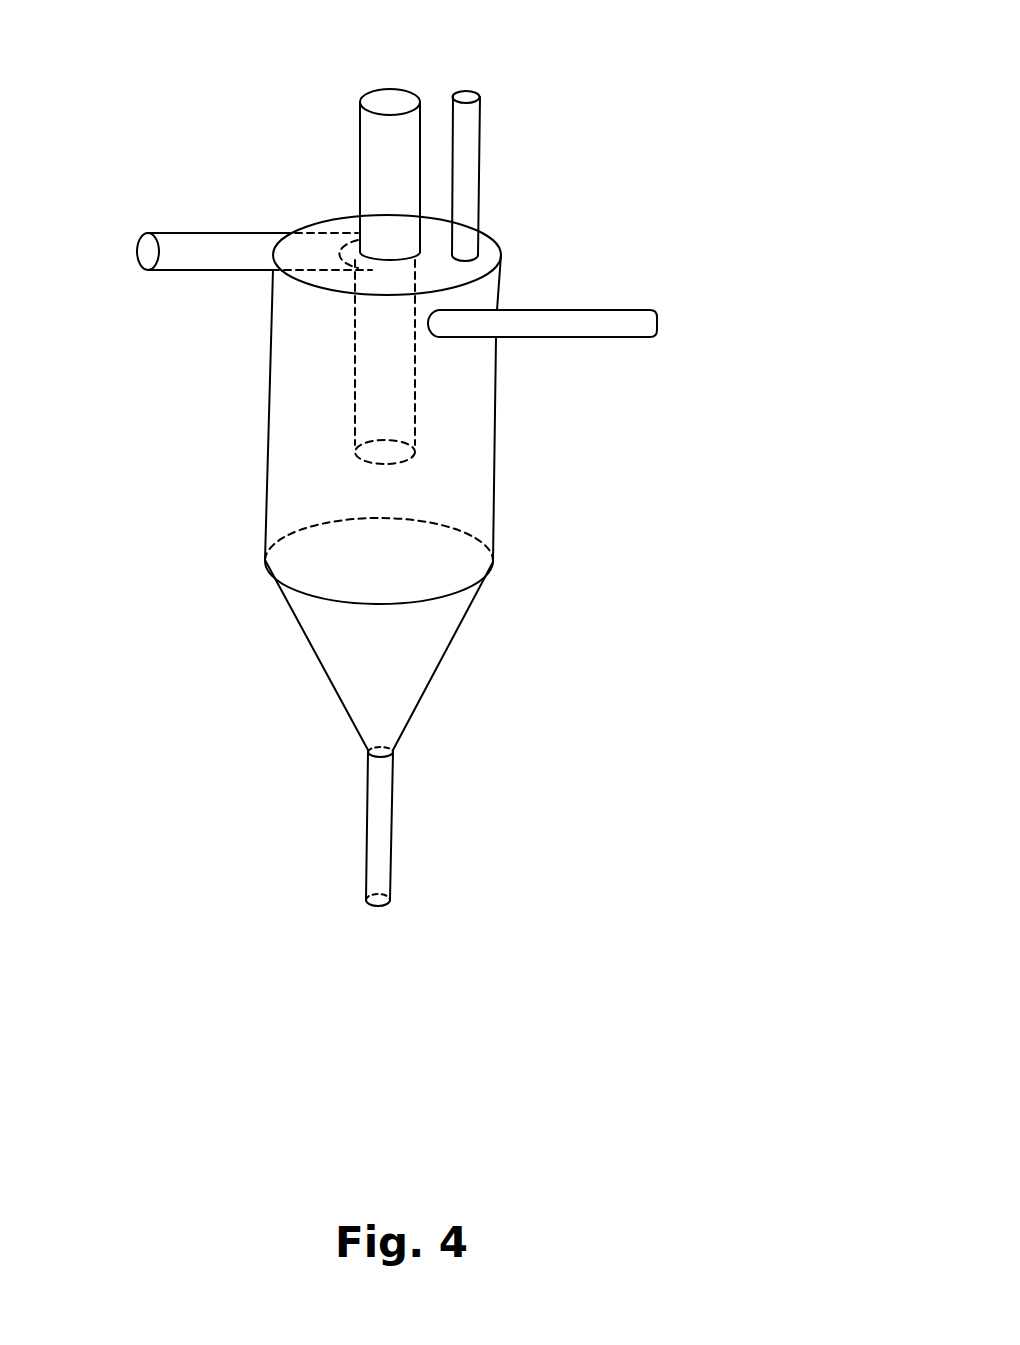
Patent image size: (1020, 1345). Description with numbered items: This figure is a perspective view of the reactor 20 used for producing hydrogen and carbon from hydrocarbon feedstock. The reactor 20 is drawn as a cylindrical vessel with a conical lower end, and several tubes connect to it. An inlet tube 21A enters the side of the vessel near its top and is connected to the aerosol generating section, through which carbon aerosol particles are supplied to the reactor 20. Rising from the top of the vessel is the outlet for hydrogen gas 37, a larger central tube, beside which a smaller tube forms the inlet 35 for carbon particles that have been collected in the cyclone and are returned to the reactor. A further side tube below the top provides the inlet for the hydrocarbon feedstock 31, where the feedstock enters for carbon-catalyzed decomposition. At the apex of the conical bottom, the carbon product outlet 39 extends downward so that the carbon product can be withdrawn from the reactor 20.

The reactor 20 is at (633, 422).
The inlet tube 21A is at (228, 233).
The inlet for the hydrocarbon feedstock 31 is at (590, 307).
The inlet for carbon particles 35 is at (482, 158).
The outlet for hydrogen gas 37 is at (360, 168).
The carbon product outlet 39 is at (397, 823).